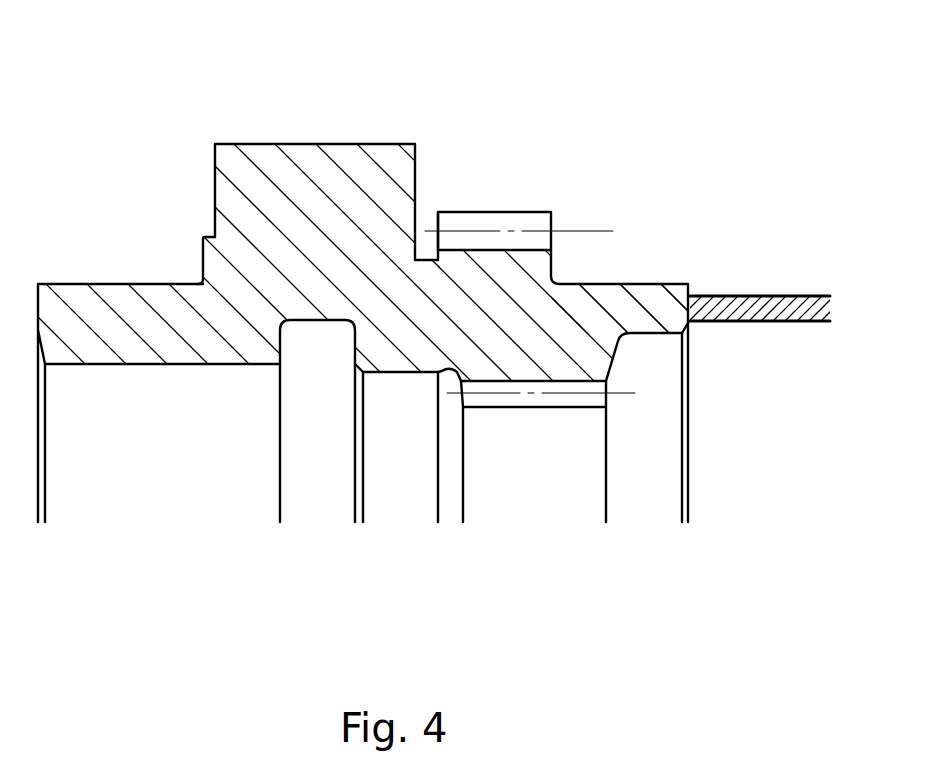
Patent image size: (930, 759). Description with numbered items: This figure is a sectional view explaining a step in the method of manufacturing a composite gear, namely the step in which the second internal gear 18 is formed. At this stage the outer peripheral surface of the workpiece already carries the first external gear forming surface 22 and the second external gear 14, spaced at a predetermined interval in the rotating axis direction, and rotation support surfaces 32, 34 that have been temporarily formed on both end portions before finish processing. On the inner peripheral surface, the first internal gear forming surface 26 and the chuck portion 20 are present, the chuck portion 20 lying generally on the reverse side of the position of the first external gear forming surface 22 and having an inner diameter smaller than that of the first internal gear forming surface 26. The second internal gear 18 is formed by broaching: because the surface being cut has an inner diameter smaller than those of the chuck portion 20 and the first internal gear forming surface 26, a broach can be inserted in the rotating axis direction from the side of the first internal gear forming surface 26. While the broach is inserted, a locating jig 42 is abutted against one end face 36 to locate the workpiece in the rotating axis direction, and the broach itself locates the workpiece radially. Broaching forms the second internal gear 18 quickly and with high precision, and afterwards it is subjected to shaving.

The second external gear 14 is at (506, 222).
The second internal gear 18 is at (545, 399).
The chuck portion 20 is at (403, 372).
The first external gear forming surface 22 is at (323, 144).
The first internal gear forming surface 26 is at (153, 364).
The rotation support surface 32 is at (100, 284).
The rotation support surface 34 is at (632, 284).
The end face 36 is at (690, 400).
The locating jig 42 is at (760, 296).